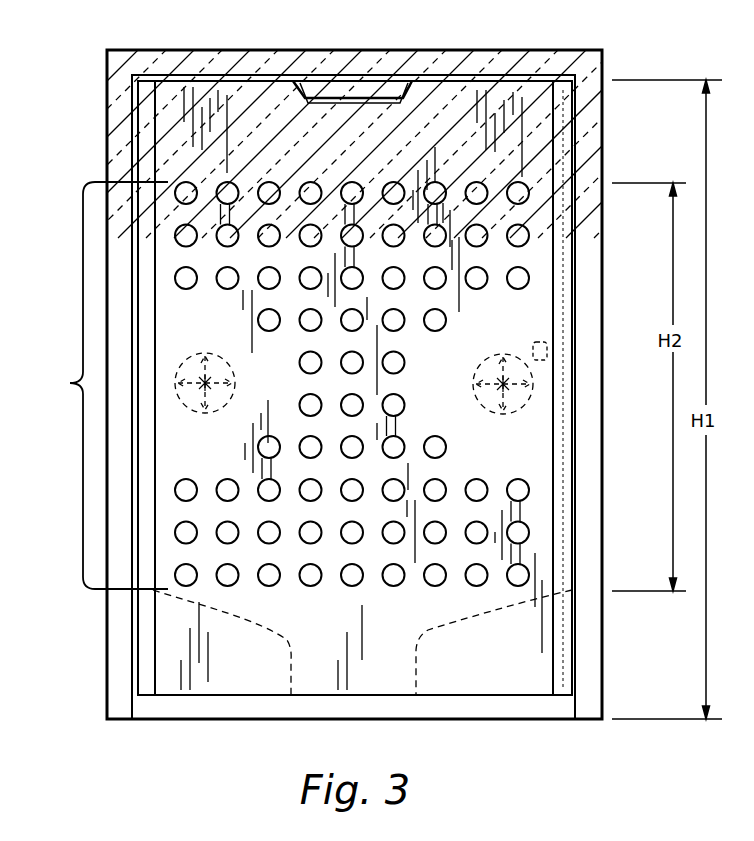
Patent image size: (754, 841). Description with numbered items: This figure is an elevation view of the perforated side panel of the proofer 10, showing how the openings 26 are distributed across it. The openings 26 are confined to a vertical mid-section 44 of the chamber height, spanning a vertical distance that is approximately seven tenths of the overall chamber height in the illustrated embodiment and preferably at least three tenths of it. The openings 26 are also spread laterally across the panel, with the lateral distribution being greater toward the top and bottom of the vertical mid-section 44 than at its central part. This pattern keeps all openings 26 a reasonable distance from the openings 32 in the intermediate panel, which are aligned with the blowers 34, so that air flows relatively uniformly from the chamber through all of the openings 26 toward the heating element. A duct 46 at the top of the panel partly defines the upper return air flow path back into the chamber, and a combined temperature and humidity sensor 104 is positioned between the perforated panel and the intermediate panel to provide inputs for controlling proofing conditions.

The proofer 10 is at (466, 37).
The openings 26 is at (320, 232).
The openings 32 is at (210, 353).
The blowers 34 is at (226, 408).
The vertical mid-section 44 is at (102, 385).
The duct 46 is at (293, 83).
The combined temperature and humidity sensor 104 is at (547, 350).